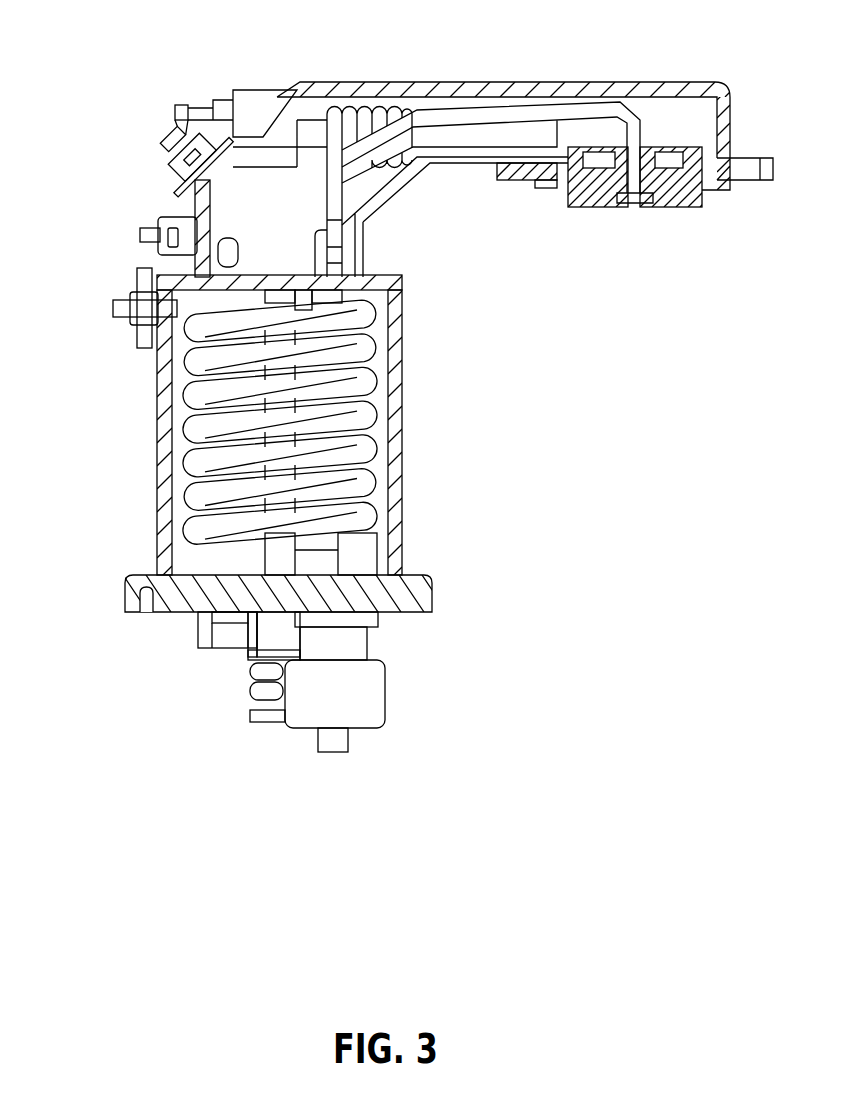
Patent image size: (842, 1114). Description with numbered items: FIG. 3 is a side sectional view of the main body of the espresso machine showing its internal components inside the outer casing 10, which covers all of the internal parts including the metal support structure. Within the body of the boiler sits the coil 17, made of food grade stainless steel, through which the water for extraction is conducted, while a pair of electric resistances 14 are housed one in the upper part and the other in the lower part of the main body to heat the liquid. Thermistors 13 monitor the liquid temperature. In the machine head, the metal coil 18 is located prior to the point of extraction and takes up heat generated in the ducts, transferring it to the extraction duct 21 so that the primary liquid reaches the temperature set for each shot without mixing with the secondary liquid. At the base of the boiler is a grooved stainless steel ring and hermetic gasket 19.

The outer casing 10 is at (404, 503).
The thermistor 13 is at (111, 338).
The electric resistance 14 is at (168, 112).
The coil 17 is at (188, 531).
The metal coil 18 is at (361, 118).
The grooved stainless steel ring and hermetic gasket 19 is at (373, 690).
The extraction duct 21 is at (516, 102).